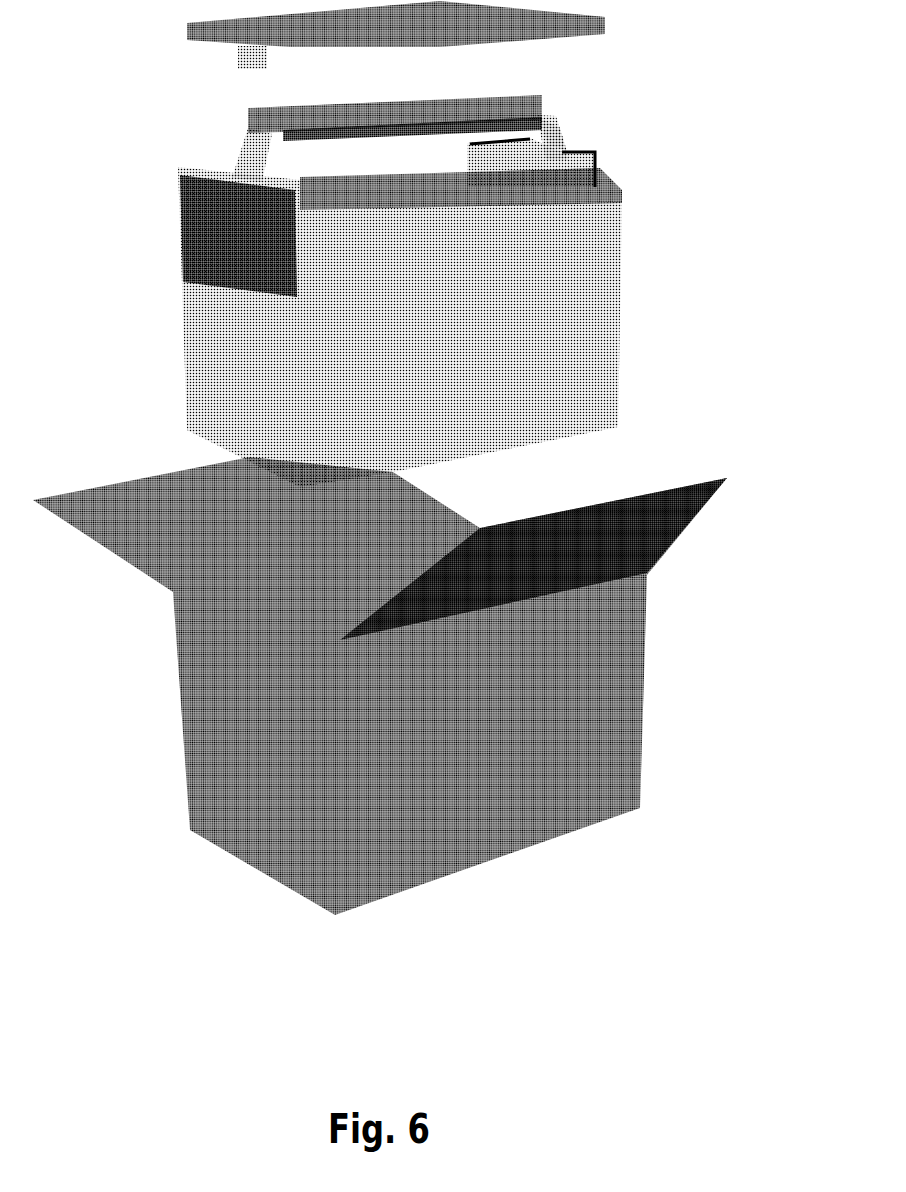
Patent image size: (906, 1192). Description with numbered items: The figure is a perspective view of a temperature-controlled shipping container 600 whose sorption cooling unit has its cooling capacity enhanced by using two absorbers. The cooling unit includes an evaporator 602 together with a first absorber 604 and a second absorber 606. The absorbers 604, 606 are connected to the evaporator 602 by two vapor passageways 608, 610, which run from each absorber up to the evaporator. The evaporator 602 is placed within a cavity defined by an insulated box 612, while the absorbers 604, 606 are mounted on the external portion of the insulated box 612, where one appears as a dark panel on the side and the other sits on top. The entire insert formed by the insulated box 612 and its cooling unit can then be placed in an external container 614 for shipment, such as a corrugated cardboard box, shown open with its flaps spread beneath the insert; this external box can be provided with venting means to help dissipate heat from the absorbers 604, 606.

The shipping container 600 is at (690, 295).
The evaporator 602 is at (533, 108).
The absorber 604 is at (595, 168).
The absorber 606 is at (182, 250).
The vapor passageway 608 is at (563, 143).
The vapor passageway 610 is at (240, 157).
The insulated box 612 is at (622, 320).
The external container 614 is at (643, 683).